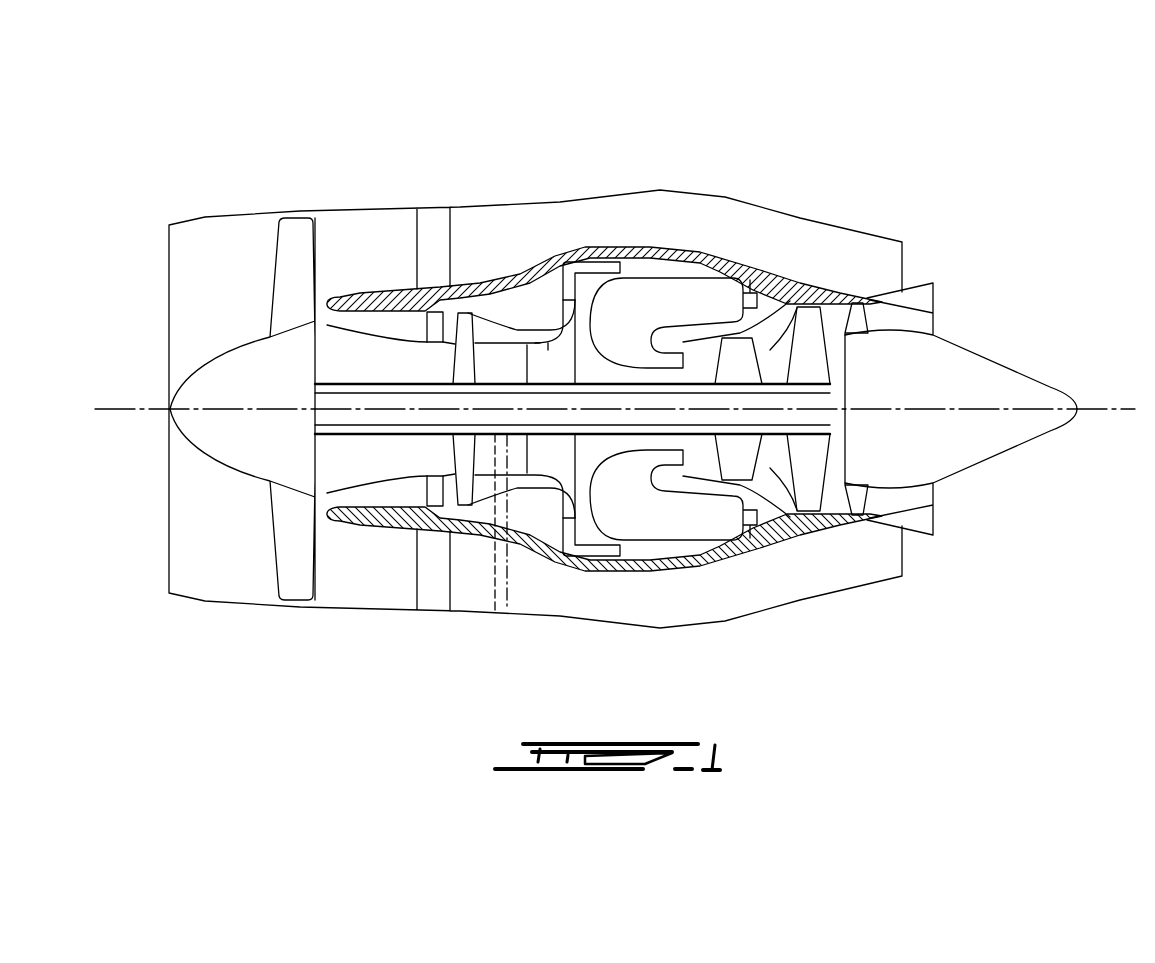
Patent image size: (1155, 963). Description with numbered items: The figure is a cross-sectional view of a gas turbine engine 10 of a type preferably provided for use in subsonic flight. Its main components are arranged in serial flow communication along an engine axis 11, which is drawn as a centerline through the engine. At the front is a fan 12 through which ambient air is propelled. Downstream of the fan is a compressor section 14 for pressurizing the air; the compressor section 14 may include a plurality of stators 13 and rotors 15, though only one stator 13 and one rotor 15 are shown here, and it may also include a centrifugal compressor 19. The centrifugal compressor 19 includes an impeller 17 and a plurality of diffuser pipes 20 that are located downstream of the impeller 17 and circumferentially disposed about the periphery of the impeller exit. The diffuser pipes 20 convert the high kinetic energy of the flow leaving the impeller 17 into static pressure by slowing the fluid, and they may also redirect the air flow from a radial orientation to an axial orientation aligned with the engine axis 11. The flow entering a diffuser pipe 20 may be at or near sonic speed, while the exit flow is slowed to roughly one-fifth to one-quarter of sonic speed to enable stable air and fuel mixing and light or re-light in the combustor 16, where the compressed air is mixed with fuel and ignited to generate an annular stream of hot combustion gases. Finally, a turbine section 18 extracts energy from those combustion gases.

The gas turbine engine 10 is at (812, 128).
The engine axis 11 is at (1105, 408).
The fan 12 is at (290, 532).
The stator 13 is at (432, 325).
The compressor section 14 is at (510, 328).
The rotor 15 is at (468, 330).
The combustor 16 is at (658, 303).
The impeller 17 is at (548, 350).
The turbine section 18 is at (772, 452).
The centrifugal compressor 19 is at (588, 140).
The diffuser pipe 20 is at (600, 262).